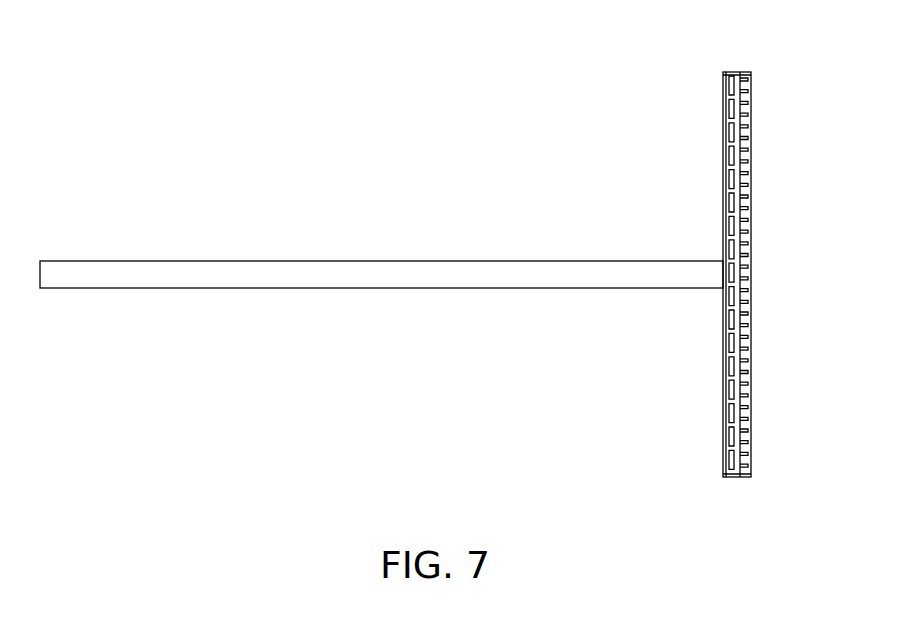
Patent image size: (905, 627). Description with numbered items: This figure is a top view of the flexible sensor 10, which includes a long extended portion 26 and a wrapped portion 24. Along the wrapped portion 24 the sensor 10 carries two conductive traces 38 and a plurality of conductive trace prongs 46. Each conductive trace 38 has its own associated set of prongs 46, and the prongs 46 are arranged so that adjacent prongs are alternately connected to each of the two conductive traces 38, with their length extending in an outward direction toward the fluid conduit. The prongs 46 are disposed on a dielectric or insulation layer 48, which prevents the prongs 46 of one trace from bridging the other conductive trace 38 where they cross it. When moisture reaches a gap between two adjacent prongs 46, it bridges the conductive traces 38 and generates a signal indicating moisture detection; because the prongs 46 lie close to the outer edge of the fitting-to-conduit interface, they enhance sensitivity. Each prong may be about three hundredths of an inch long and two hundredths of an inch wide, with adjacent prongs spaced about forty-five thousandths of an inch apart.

The sensor 10 is at (421, 298).
The wrapped portion 24 is at (743, 298).
The extended portion 26 is at (306, 288).
The conductive traces 38 is at (729, 404).
The conductive trace prongs 46 is at (748, 275).
The insulation layer 48 is at (752, 370).